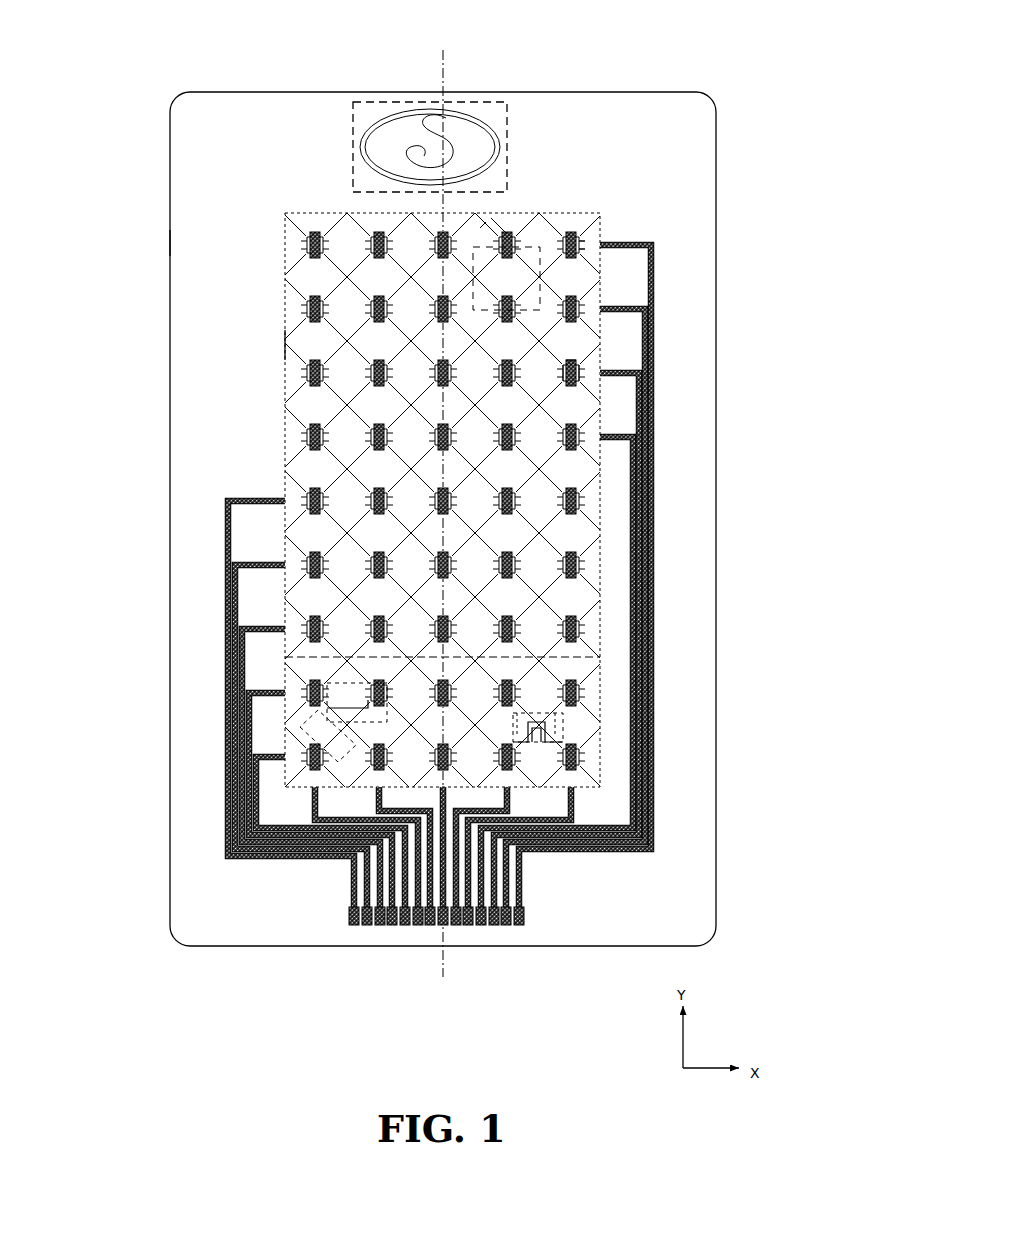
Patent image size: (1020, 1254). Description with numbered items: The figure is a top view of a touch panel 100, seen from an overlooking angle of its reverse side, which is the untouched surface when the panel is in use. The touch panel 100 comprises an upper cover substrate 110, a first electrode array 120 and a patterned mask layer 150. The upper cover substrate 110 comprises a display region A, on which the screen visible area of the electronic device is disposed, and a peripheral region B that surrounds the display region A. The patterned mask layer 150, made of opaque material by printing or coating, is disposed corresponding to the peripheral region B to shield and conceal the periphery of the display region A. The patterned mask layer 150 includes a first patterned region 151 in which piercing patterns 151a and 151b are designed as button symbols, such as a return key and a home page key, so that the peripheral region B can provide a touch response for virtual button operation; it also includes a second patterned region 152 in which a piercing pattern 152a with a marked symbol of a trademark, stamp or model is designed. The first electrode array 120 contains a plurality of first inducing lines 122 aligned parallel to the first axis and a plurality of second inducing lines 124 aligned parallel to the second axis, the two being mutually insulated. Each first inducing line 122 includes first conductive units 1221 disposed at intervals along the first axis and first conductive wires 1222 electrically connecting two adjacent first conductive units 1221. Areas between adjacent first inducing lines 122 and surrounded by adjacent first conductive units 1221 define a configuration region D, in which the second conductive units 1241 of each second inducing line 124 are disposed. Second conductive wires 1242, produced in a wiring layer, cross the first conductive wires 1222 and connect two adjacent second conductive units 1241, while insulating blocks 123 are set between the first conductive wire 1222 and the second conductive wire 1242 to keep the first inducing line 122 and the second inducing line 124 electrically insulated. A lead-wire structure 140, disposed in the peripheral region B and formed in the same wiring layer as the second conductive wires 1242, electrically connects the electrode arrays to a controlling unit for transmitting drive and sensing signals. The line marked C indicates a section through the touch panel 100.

The touch panel 100 is at (147, 72).
The upper cover substrate 110 is at (716, 140).
The first electrode array 120 is at (510, 402).
The first inducing line 122 is at (605, 232).
The second inducing line 124 is at (605, 290).
The first conductive unit 1221 is at (490, 216).
The first conductive wire 1222 is at (583, 240).
The second conductive unit 1241 is at (537, 215).
The second conductive wire 1242 is at (580, 376).
The insulating block 123 is at (585, 352).
The lead-wire structure 140 is at (655, 497).
The patterned mask layer 150 is at (700, 436).
The first patterned region 151 is at (655, 828).
The piercing pattern 151a is at (330, 758).
The piercing pattern 151b is at (584, 735).
The second patterned region 152 is at (355, 118).
The piercing pattern 152a is at (449, 104).
The display region A is at (283, 345).
The peripheral region B is at (168, 243).
The section line C is at (441, 50).
The configuration region D is at (548, 316).